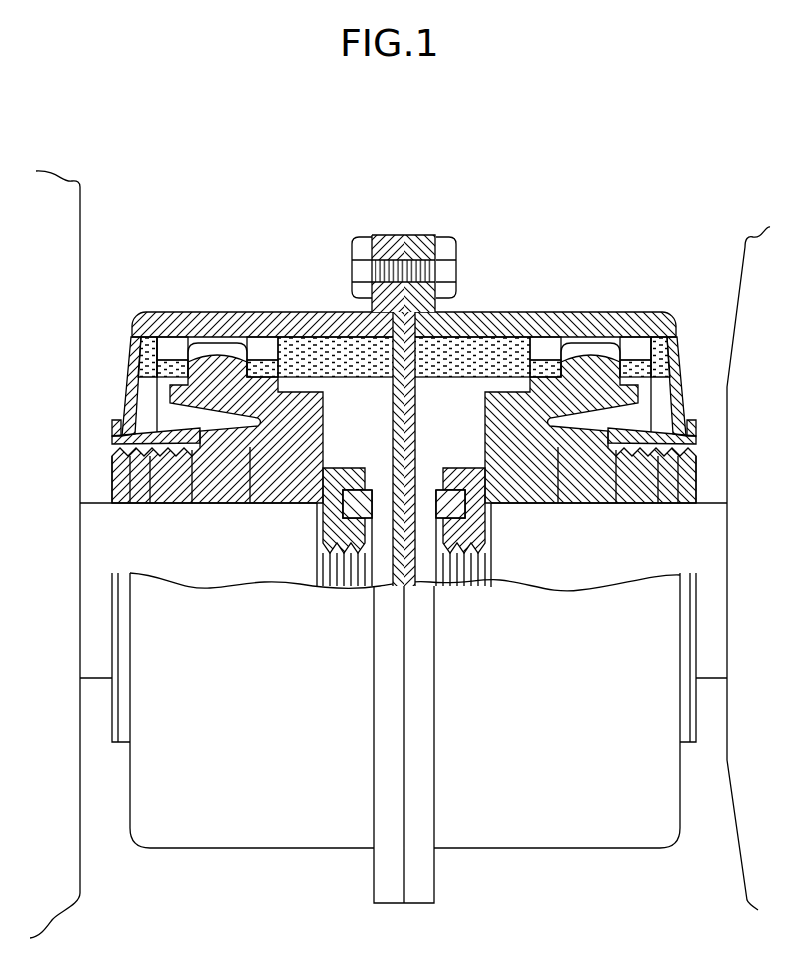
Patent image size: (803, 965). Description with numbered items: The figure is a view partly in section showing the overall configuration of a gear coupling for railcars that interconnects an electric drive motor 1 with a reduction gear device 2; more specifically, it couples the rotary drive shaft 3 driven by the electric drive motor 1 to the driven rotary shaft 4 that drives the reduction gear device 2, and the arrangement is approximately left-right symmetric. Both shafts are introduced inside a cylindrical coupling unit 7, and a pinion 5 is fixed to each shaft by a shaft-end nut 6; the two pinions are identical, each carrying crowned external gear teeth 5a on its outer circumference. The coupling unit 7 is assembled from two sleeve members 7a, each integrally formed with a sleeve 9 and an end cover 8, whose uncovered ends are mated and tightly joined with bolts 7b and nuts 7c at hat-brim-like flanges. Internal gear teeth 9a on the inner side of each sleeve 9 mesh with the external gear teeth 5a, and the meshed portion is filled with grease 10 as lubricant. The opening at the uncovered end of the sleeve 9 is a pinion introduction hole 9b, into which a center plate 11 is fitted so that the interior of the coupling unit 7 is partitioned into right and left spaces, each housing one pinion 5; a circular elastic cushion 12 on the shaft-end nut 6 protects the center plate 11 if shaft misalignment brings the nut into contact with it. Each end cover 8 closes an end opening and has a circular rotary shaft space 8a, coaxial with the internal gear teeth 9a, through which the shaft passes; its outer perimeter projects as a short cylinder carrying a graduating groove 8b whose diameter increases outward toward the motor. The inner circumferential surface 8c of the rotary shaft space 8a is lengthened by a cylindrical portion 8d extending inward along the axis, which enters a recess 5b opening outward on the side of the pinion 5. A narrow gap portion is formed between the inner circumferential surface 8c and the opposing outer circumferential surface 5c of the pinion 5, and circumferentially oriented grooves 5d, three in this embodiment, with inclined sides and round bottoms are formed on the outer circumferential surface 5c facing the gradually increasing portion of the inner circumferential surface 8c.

The electric drive motor 1 is at (82, 893).
The reduction gear device 2 is at (743, 873).
The rotary drive shaft 3 is at (105, 558).
The driven rotary shaft 4 is at (690, 563).
The pinion 5 is at (215, 362).
The external gear teeth 5a is at (206, 353).
The recess 5b is at (249, 504).
The outer circumferential surface 5c is at (133, 504).
The circumferentially oriented grooves 5d is at (117, 504).
The shaft-end nut 6 is at (334, 468).
The coupling unit 7 is at (538, 898).
The sleeve member 7a is at (138, 313).
The bolts 7b is at (360, 235).
The nuts 7c is at (444, 235).
The end cover 8 is at (131, 360).
The rotary shaft space 8a is at (195, 504).
The graduating groove 8b is at (124, 428).
The inner circumferential surface 8c is at (150, 504).
The cylindrical portion 8d is at (197, 428).
The sleeve 9 is at (254, 312).
The internal gear teeth 9a is at (168, 343).
The pinion introduction hole 9b is at (362, 338).
The grease 10 is at (285, 345).
The center plate 11 is at (392, 418).
The circular elastic cushion 12 is at (370, 490).